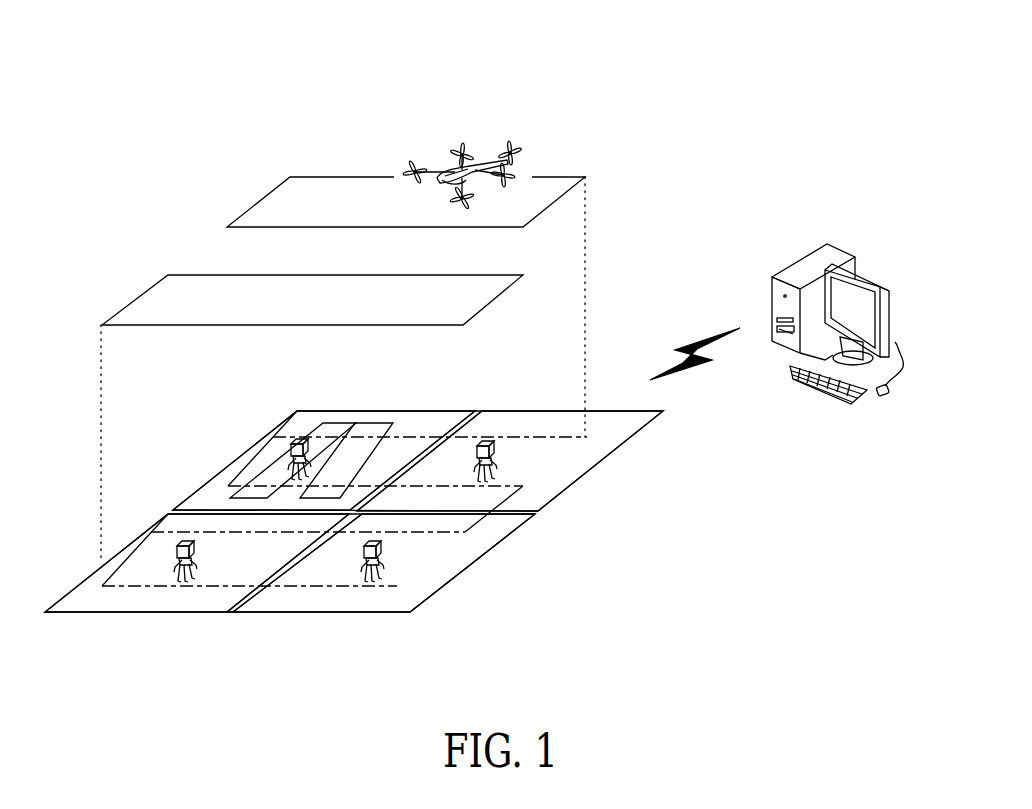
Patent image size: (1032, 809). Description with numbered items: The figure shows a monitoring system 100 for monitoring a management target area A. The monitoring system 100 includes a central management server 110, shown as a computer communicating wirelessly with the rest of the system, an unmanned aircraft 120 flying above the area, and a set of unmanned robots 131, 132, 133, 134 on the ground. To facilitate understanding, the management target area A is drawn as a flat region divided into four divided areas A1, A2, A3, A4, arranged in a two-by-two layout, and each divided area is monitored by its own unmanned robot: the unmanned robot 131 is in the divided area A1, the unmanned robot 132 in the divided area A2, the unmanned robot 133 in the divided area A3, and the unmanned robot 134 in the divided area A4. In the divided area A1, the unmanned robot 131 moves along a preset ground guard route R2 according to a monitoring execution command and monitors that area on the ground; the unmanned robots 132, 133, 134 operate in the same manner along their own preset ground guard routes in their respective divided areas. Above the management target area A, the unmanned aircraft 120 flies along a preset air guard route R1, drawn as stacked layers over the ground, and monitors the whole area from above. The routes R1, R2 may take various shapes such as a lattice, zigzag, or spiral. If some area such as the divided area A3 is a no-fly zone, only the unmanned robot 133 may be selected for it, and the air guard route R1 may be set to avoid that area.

The monitoring system 100 is at (512, 31).
The central management server 110 is at (800, 253).
The unmanned aircraft 120 is at (478, 153).
The unmanned robot 131 is at (292, 440).
The unmanned robot 132 is at (503, 455).
The unmanned robot 133 is at (390, 558).
The unmanned robot 134 is at (177, 546).
The air guard route R1 is at (260, 200).
The ground guard route R2 is at (386, 423).
The management target area A is at (354, 513).
The divided area A1 is at (380, 423).
The divided area A2 is at (529, 417).
The divided area A3 is at (325, 606).
The divided area A4 is at (155, 606).